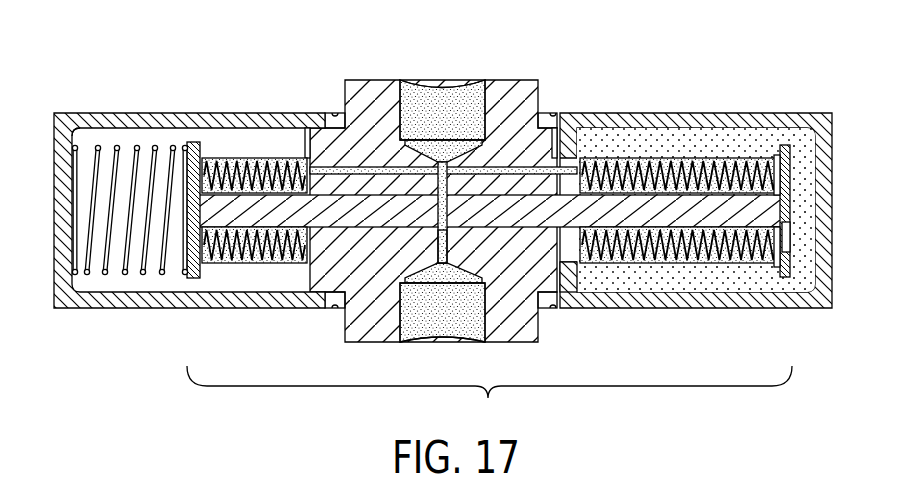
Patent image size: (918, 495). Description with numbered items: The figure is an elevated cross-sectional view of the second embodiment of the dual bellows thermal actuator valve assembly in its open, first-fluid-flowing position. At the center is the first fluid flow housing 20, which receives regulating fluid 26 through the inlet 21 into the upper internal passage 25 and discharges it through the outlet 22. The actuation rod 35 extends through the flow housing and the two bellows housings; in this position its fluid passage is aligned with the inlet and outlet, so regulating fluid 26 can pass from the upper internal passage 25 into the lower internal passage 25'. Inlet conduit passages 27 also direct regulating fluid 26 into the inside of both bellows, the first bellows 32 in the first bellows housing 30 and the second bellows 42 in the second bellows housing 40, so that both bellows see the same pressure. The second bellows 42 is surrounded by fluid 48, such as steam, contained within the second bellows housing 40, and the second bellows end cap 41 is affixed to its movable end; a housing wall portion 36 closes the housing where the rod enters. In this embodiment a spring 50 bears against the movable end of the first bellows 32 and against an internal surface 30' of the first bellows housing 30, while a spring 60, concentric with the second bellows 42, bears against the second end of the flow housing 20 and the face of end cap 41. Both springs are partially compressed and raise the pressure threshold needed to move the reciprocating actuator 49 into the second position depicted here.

The first fluid flow housing 20 is at (520, 90).
The inlet 21 is at (485, 110).
The lower elastic block 22 is at (485, 323).
The upper internal passage 25 is at (402, 149).
The lower internal passage 25' is at (405, 304).
The regulating fluid 26 is at (236, 158).
The inlet conduit passages 27 is at (342, 160).
The first bellows housing 30 is at (189, 190).
The internal surface of first bellows housing 30' is at (88, 108).
The first bellows 32 is at (228, 264).
The actuation rod 35 is at (352, 198).
The housing wall 36 is at (569, 292).
The second bellows housing 40 is at (660, 124).
The second bellows end cap 41 is at (786, 252).
The second bellows 42 is at (707, 160).
The fluid 48 is at (803, 137).
The reciprocating actuator 49 is at (489, 397).
The spring 50 is at (135, 148).
The spring 60 is at (762, 157).